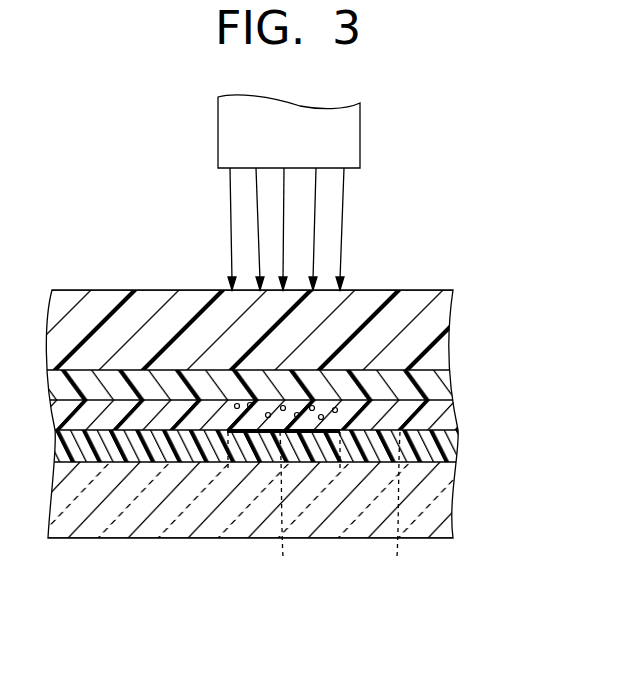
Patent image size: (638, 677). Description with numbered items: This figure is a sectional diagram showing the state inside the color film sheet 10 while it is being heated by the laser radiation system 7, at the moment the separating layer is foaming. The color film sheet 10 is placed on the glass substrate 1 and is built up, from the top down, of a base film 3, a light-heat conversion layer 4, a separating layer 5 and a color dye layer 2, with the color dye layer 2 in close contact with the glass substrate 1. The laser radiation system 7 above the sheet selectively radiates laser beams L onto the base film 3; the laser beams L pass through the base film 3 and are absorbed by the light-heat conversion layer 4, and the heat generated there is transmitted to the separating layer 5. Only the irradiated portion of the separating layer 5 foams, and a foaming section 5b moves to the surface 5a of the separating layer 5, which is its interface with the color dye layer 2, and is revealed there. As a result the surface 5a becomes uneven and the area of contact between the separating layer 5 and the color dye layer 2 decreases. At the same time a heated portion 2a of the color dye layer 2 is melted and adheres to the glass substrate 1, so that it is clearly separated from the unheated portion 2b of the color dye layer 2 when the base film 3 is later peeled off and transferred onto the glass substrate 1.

The glass substrate 1 is at (428, 493).
The color dye layer 2 is at (431, 446).
The heated portion 2a is at (281, 514).
The unheated portion 2b is at (396, 514).
The base film 3 is at (414, 333).
The light-heat conversion layer 4 is at (426, 390).
The separating layer 5 is at (426, 414).
The surface of the separating layer 5a is at (322, 432).
The foaming section 5b is at (237, 403).
The laser radiation system 7 is at (343, 133).
The laser beams L is at (317, 222).
The color film sheet 10 is at (515, 295).